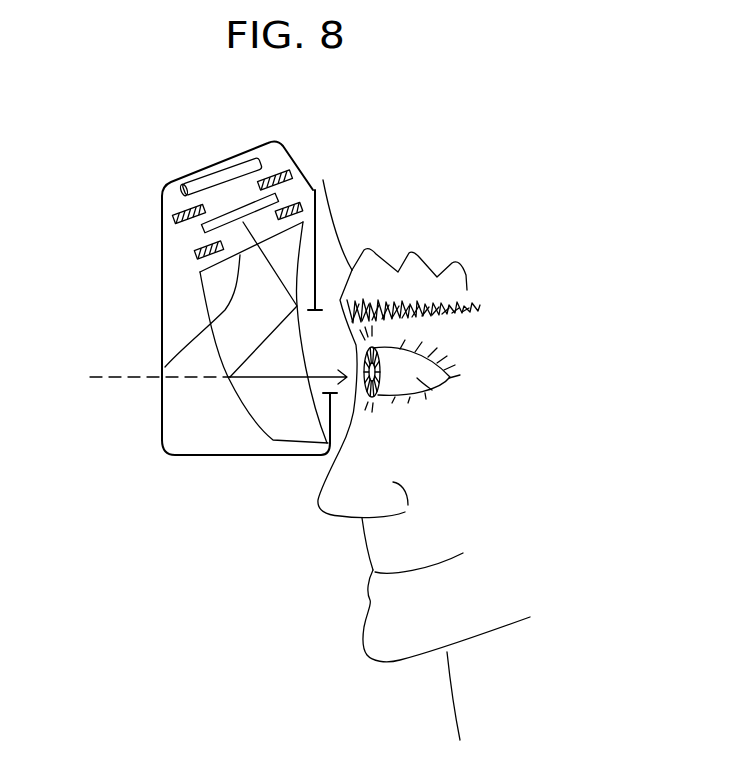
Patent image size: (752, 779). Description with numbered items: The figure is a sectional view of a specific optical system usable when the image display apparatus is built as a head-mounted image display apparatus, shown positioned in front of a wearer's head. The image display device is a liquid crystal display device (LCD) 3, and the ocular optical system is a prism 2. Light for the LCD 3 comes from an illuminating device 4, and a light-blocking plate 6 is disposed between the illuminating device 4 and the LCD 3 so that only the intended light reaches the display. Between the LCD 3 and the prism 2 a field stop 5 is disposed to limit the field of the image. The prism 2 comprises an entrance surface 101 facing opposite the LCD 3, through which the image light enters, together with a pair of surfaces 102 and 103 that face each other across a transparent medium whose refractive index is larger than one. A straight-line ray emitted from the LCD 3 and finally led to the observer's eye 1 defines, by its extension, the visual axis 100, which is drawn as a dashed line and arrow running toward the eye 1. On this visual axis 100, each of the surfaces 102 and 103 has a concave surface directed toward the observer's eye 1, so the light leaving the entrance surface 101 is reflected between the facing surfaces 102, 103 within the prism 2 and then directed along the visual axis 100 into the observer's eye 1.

The observer's eye 1 is at (427, 377).
The prism 2 is at (225, 280).
The liquid crystal display device 3 is at (203, 231).
The illuminating device 4 is at (236, 172).
The field stop 5 is at (297, 201).
The light-blocking plate 6 is at (283, 172).
The visual axis 100 is at (95, 377).
The entrance surface 101 is at (165, 367).
The surface 102 is at (310, 405).
The surface 103 is at (245, 403).